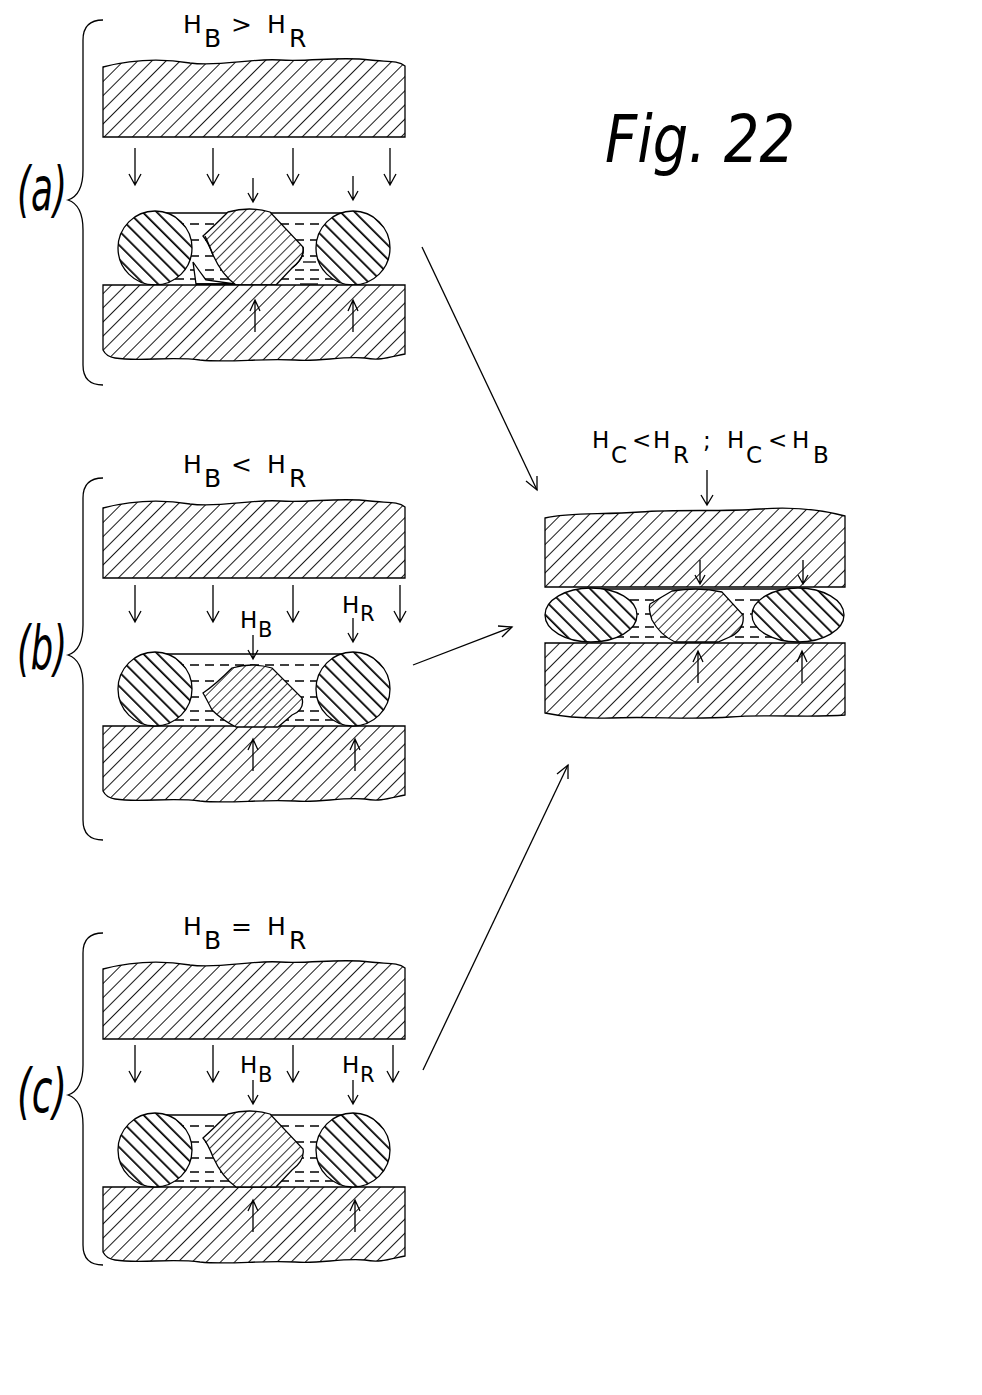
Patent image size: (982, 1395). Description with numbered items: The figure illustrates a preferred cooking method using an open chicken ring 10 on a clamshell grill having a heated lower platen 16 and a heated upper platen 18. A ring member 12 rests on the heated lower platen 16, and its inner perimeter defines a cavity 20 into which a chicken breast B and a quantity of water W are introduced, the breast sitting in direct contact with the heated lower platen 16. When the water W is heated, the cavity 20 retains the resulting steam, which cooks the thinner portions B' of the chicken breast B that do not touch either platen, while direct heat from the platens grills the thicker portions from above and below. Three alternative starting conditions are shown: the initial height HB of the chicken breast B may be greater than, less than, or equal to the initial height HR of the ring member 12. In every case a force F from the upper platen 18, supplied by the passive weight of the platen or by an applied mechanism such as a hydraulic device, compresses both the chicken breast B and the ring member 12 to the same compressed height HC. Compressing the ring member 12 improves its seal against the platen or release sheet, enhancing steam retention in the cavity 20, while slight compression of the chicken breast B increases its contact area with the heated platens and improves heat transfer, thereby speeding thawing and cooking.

The open chicken ring 10 is at (400, 213).
The ring member 12 is at (126, 216).
The heated lower platen 16 is at (388, 348).
The heated upper platen 18 is at (400, 72).
The cavity 20 is at (200, 272).
The chicken breast B is at (224, 308).
The thinner portions of chicken breast B' is at (248, 211).
The quantity of water W is at (305, 283).
The initial height of chicken breast HB is at (255, 179).
The initial height of ring member HR is at (359, 176).
The compressed height HC is at (752, 557).
The force F is at (717, 487).